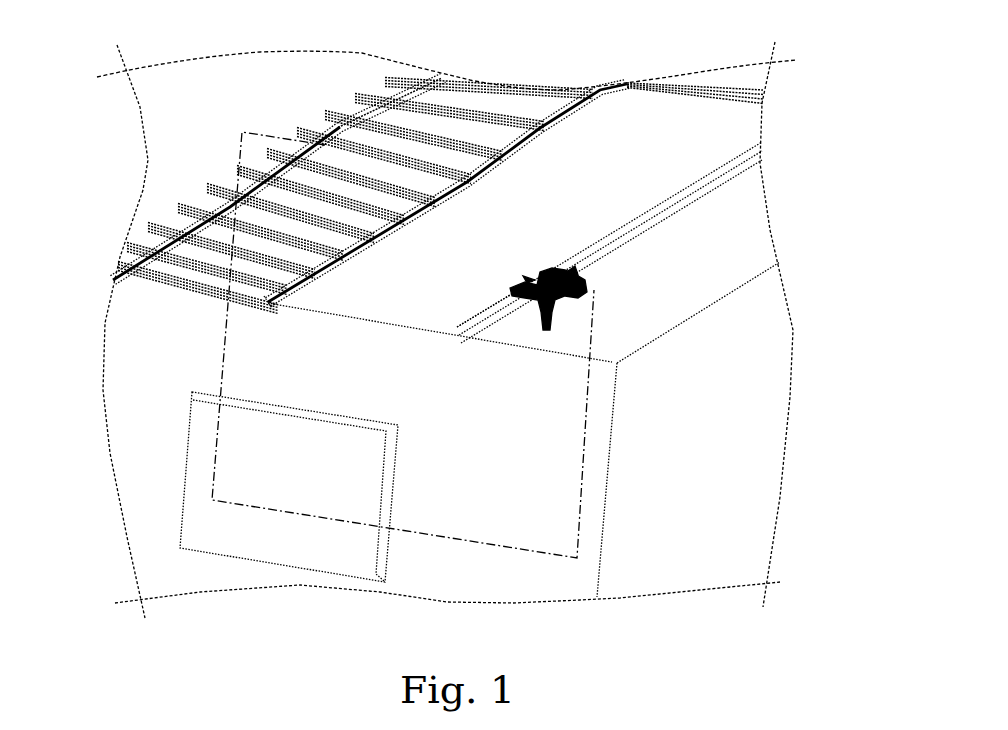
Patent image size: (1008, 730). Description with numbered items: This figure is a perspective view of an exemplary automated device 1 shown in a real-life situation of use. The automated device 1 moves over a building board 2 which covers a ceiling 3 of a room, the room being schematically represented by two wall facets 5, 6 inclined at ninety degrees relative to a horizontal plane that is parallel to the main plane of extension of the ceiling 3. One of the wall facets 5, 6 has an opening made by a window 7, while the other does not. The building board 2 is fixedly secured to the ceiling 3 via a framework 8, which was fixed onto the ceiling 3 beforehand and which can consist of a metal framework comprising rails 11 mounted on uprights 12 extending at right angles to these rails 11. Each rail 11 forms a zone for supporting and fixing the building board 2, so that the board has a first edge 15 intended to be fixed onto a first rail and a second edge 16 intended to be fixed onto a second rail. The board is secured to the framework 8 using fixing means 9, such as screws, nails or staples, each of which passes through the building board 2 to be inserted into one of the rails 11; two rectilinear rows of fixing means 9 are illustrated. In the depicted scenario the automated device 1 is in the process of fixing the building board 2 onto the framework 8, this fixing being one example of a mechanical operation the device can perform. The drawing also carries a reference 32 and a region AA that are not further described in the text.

The automated device 1 is at (590, 292).
The building board 2 is at (467, 308).
The ceiling 3 is at (167, 172).
The wall facet 5 is at (145, 547).
The wall facet 6 is at (752, 480).
The window 7 is at (193, 483).
The framework 8 is at (467, 305).
The fixing means 9 is at (497, 317).
The rail 11 is at (340, 130).
The upright 12 is at (394, 126).
The first edge 15 is at (337, 270).
The second edge 16 is at (457, 330).
The rail end 32 is at (266, 293).
The working area AA is at (578, 530).